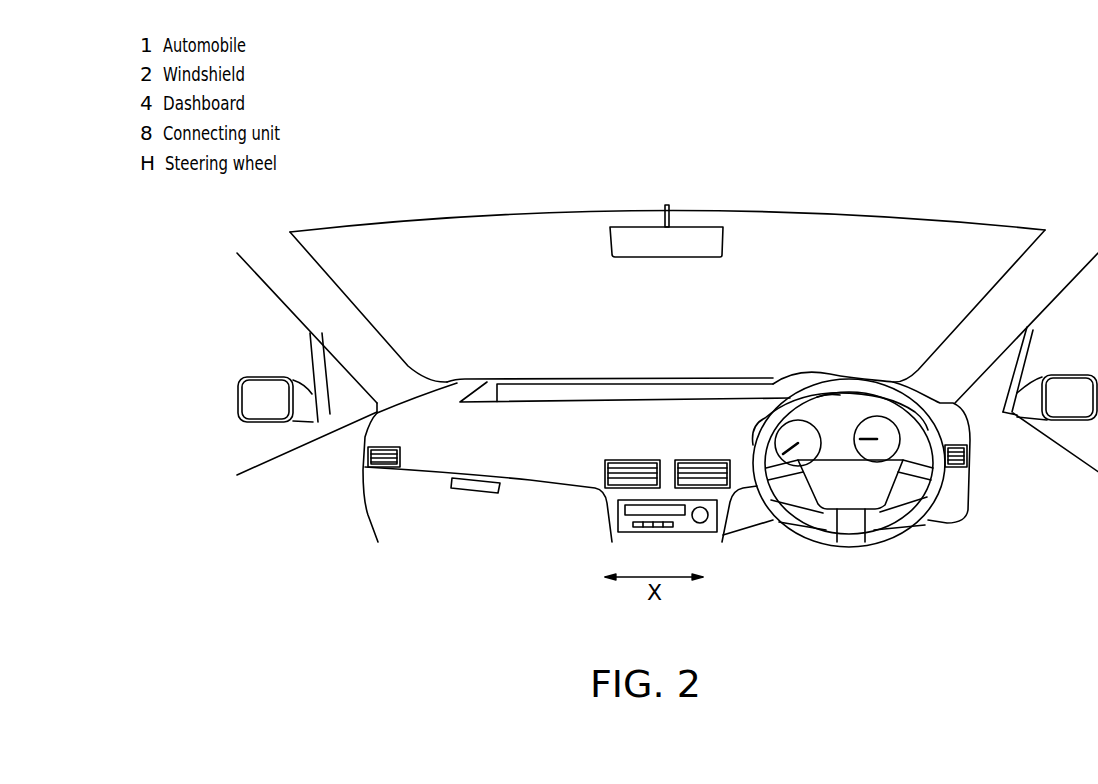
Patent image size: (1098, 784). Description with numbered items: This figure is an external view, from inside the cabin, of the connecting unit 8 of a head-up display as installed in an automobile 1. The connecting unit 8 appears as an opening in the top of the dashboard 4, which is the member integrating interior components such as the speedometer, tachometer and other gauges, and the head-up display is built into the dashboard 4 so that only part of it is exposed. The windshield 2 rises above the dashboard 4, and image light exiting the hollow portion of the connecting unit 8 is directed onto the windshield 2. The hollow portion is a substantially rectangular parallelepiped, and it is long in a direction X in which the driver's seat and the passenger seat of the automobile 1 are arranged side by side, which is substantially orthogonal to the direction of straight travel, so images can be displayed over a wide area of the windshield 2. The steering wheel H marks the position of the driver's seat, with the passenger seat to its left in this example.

The automobile 1 is at (463, 183).
The windshield 2 is at (889, 228).
The dashboard 4 is at (773, 380).
The connecting unit 8 is at (483, 391).
The steering wheel H is at (935, 487).